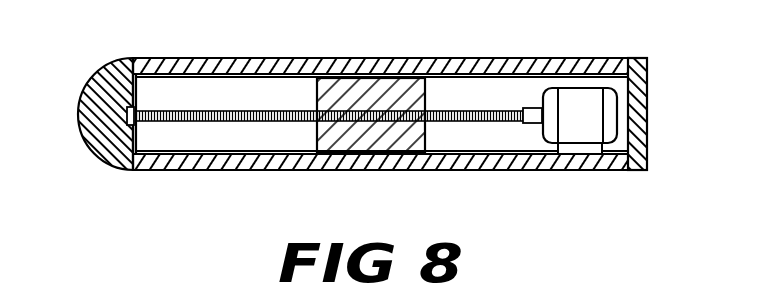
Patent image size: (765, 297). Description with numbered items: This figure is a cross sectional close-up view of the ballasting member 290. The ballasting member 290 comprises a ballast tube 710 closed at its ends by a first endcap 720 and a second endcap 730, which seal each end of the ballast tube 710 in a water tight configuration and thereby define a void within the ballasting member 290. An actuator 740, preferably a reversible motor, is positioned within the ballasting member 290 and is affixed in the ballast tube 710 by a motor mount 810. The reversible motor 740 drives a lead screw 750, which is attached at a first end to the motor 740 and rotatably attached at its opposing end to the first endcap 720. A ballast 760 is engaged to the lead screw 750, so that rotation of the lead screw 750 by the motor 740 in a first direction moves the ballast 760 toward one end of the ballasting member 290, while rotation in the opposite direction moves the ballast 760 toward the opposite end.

The ballasting member 290 is at (375, 116).
The ballast tube 710 is at (161, 174).
The first endcap 720 is at (93, 147).
The second endcap 730 is at (638, 108).
The actuator 740 is at (583, 117).
The lead screw 750 is at (272, 115).
The ballast 760 is at (358, 138).
The motor mount 810 is at (568, 152).